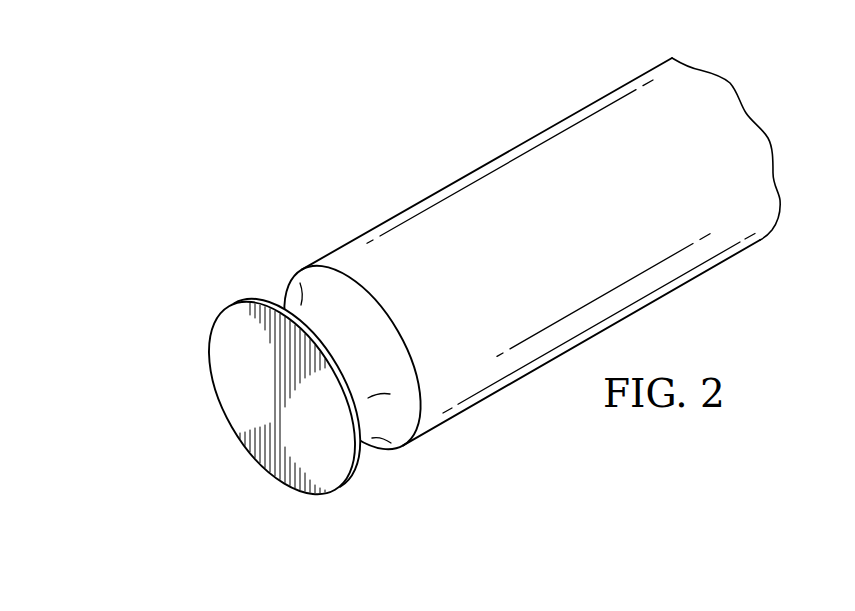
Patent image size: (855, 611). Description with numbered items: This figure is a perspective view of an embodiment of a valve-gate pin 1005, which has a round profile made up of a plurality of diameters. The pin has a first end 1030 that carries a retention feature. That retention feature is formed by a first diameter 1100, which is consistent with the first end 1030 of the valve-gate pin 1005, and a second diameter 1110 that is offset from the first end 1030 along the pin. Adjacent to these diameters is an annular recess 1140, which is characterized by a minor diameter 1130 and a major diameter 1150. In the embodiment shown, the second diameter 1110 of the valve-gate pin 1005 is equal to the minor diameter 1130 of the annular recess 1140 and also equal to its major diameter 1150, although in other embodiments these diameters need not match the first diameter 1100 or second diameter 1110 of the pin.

The valve-gate pin 1005 is at (415, 93).
The first end 1030 is at (148, 198).
The first diameter 1100 is at (304, 494).
The second diameter 1110 is at (375, 449).
The minor diameter 1130 is at (345, 367).
The annular recess 1140 is at (278, 302).
The major diameter 1150 is at (299, 272).